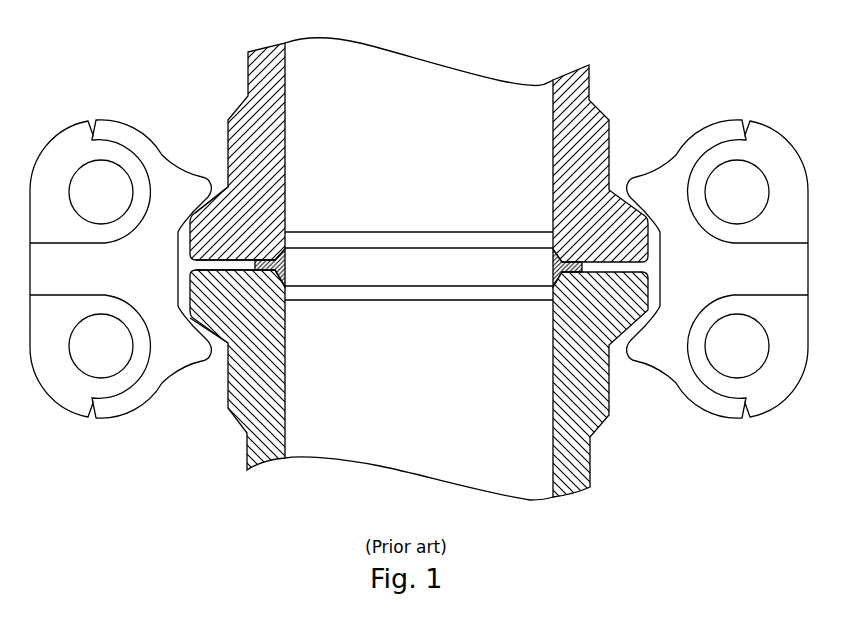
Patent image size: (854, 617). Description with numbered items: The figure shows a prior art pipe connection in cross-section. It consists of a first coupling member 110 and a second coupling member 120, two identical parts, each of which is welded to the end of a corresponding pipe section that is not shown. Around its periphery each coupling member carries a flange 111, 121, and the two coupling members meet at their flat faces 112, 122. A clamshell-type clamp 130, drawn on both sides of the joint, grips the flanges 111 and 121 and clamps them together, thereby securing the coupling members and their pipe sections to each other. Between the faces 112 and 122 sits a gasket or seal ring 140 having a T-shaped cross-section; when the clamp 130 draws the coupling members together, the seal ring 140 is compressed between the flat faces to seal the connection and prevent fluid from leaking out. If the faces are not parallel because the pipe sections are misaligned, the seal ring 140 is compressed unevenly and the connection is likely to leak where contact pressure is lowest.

The first coupling member 110 is at (222, 69).
The flange 111 is at (222, 187).
The flat face 112 is at (227, 258).
The second coupling member 120 is at (226, 446).
The flange 121 is at (222, 343).
The flat face 122 is at (276, 300).
The clamshell-type clamp 130 is at (70, 123).
The seal ring 140 is at (287, 264).